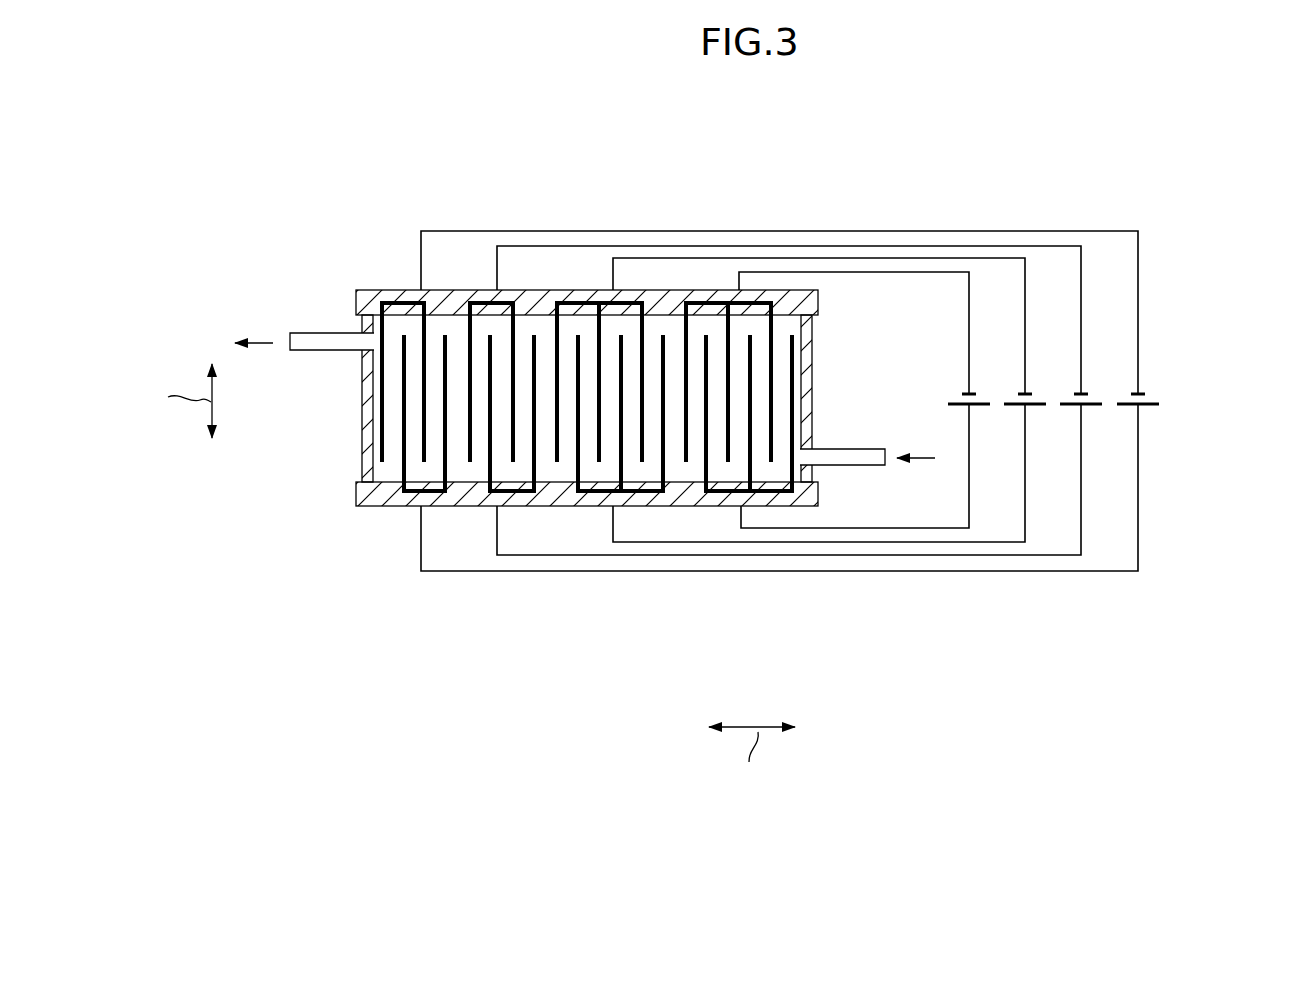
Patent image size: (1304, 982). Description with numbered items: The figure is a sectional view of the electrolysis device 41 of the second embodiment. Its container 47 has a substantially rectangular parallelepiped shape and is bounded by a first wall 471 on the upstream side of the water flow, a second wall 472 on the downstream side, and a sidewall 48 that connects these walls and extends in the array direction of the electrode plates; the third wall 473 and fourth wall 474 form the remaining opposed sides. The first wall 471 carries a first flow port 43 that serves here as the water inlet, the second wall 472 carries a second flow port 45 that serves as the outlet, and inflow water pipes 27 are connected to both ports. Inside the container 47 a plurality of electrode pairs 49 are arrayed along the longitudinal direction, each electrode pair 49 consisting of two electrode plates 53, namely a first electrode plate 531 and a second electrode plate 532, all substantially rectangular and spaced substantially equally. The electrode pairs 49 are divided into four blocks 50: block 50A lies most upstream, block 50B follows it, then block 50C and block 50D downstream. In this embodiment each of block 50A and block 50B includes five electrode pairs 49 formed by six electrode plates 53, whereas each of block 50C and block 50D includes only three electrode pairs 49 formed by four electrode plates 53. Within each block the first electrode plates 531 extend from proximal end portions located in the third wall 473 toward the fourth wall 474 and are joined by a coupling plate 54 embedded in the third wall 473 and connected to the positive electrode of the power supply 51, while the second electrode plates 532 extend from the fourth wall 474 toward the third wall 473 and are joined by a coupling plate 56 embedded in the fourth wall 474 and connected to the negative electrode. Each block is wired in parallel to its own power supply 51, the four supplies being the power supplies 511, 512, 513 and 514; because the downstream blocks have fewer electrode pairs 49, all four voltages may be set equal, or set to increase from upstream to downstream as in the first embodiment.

The electrolysis device 41 is at (200, 127).
The container 47 is at (372, 288).
The first wall 471 is at (813, 367).
The second wall 472 is at (363, 444).
The third wall 473 is at (658, 506).
The fourth wall 474 is at (527, 335).
The sidewall 48 is at (610, 251).
The inflow water pipe 27 is at (313, 348).
The first flow port 43 is at (813, 460).
The second flow port 45 is at (358, 345).
The electrode pair 49 is at (383, 652).
The block 50 is at (615, 311).
The block 50A is at (765, 300).
The block 50B is at (655, 336).
The block 50C is at (471, 340).
The block 50D is at (438, 336).
The electrode plate 53 is at (542, 411).
The first electrode plate 531 is at (417, 460).
The second electrode plate 532 is at (478, 302).
The coupling plate 54 is at (785, 493).
The coupling plate 56 is at (783, 336).
The power supply 51 is at (1243, 415).
The power supply 511 is at (981, 413).
The power supply 512 is at (1037, 413).
The power supply 513 is at (1093, 413).
The power supply 514 is at (1150, 413).